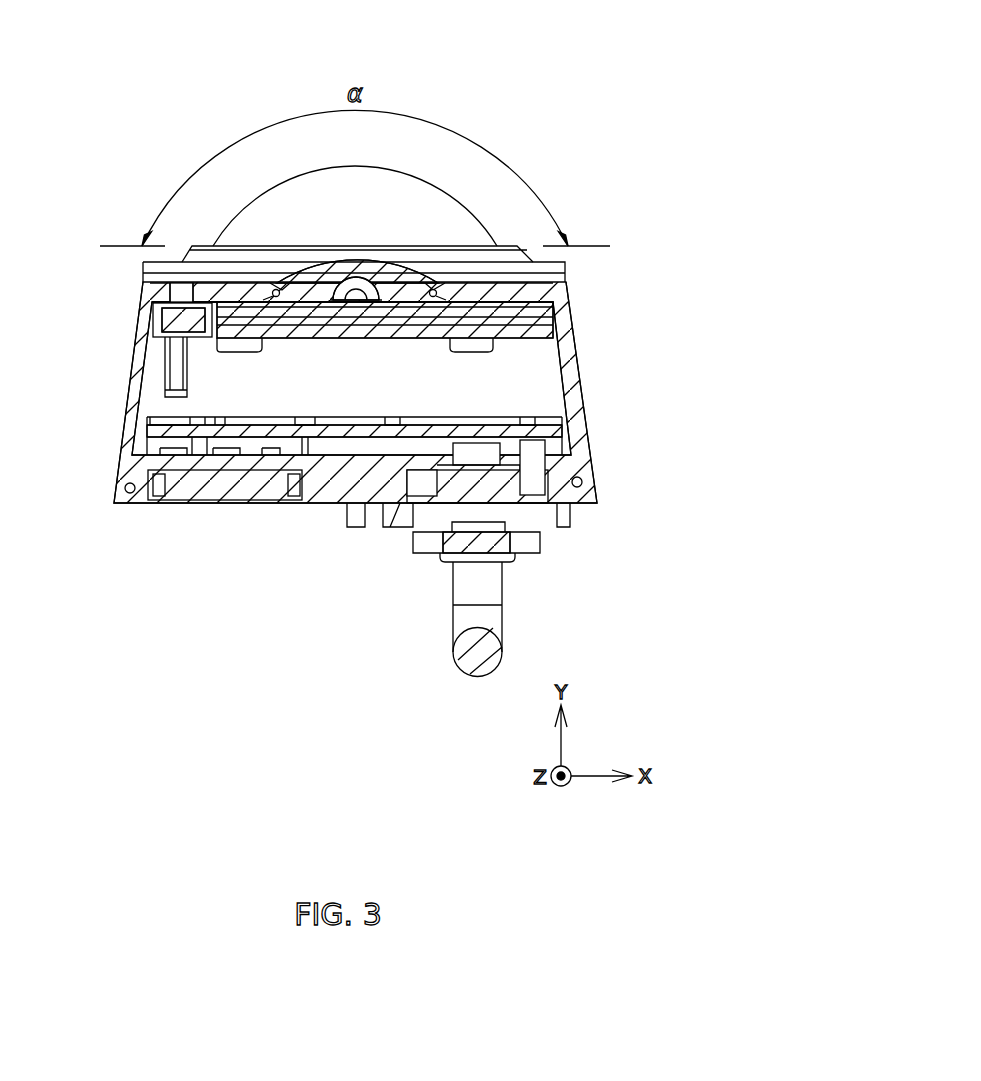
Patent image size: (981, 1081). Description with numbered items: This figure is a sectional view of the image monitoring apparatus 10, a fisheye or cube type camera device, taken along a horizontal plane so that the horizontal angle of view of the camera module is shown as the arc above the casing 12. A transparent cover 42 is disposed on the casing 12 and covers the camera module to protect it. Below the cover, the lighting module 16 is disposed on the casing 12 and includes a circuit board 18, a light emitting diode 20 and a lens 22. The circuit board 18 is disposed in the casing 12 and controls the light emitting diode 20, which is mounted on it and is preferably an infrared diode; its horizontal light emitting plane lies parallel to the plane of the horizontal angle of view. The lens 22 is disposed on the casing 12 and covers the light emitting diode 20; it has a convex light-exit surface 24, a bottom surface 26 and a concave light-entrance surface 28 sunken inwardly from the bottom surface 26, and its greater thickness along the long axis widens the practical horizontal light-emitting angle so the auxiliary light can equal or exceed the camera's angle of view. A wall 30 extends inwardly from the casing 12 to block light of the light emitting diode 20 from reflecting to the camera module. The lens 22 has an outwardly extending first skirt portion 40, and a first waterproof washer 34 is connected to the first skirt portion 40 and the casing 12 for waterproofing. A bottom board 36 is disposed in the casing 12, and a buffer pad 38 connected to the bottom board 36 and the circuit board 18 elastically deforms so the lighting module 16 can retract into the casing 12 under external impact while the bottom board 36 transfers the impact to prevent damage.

The image monitoring apparatus 10 is at (543, 90).
The casing 12 is at (577, 408).
The lighting module 16 is at (441, 603).
The circuit board 18 is at (378, 312).
The light emitting diode 20 is at (352, 304).
The lens 22 is at (315, 290).
The convex light-exit surface 24 is at (410, 282).
The bottom surface 26 is at (195, 363).
The concave light-entrance surface 28 is at (370, 279).
The wall 30 is at (183, 407).
The first waterproof washer 34 is at (430, 330).
The bottom board 36 is at (440, 336).
The buffer pad 38 is at (416, 322).
The first skirt portion 40 is at (445, 293).
The transparent cover 42 is at (355, 176).